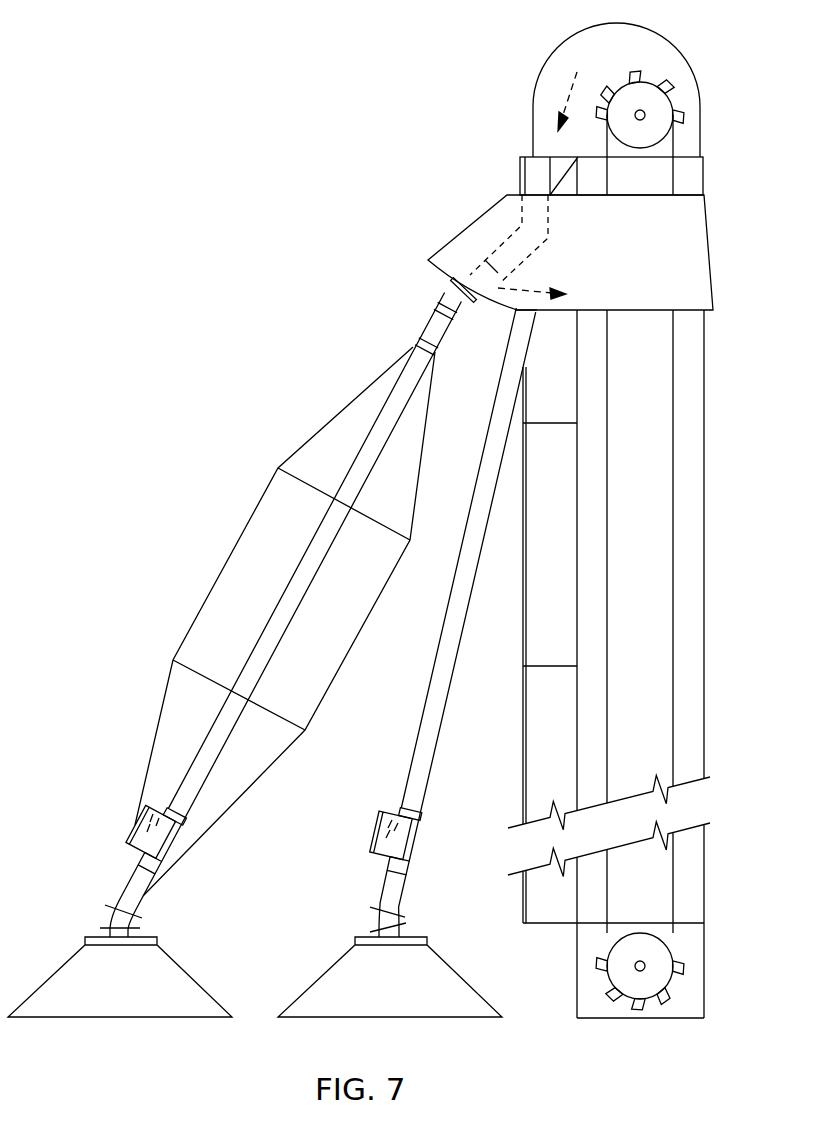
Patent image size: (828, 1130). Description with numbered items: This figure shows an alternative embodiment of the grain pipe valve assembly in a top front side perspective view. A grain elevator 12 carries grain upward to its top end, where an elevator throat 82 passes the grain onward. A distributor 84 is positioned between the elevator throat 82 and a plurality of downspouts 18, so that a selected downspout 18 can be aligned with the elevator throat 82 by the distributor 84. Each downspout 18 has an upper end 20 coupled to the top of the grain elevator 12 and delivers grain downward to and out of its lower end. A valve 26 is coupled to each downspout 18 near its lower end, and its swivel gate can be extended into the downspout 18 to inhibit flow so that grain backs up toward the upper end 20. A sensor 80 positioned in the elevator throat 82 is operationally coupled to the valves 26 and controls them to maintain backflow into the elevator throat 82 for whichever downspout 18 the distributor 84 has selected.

The grain elevator 12 is at (692, 510).
The downspout 18 is at (412, 372).
The upper end 20 is at (457, 290).
The valve 26 is at (143, 840).
The sensor 80 is at (540, 168).
The elevator throat 82 is at (535, 180).
The distributor 84 is at (687, 232).